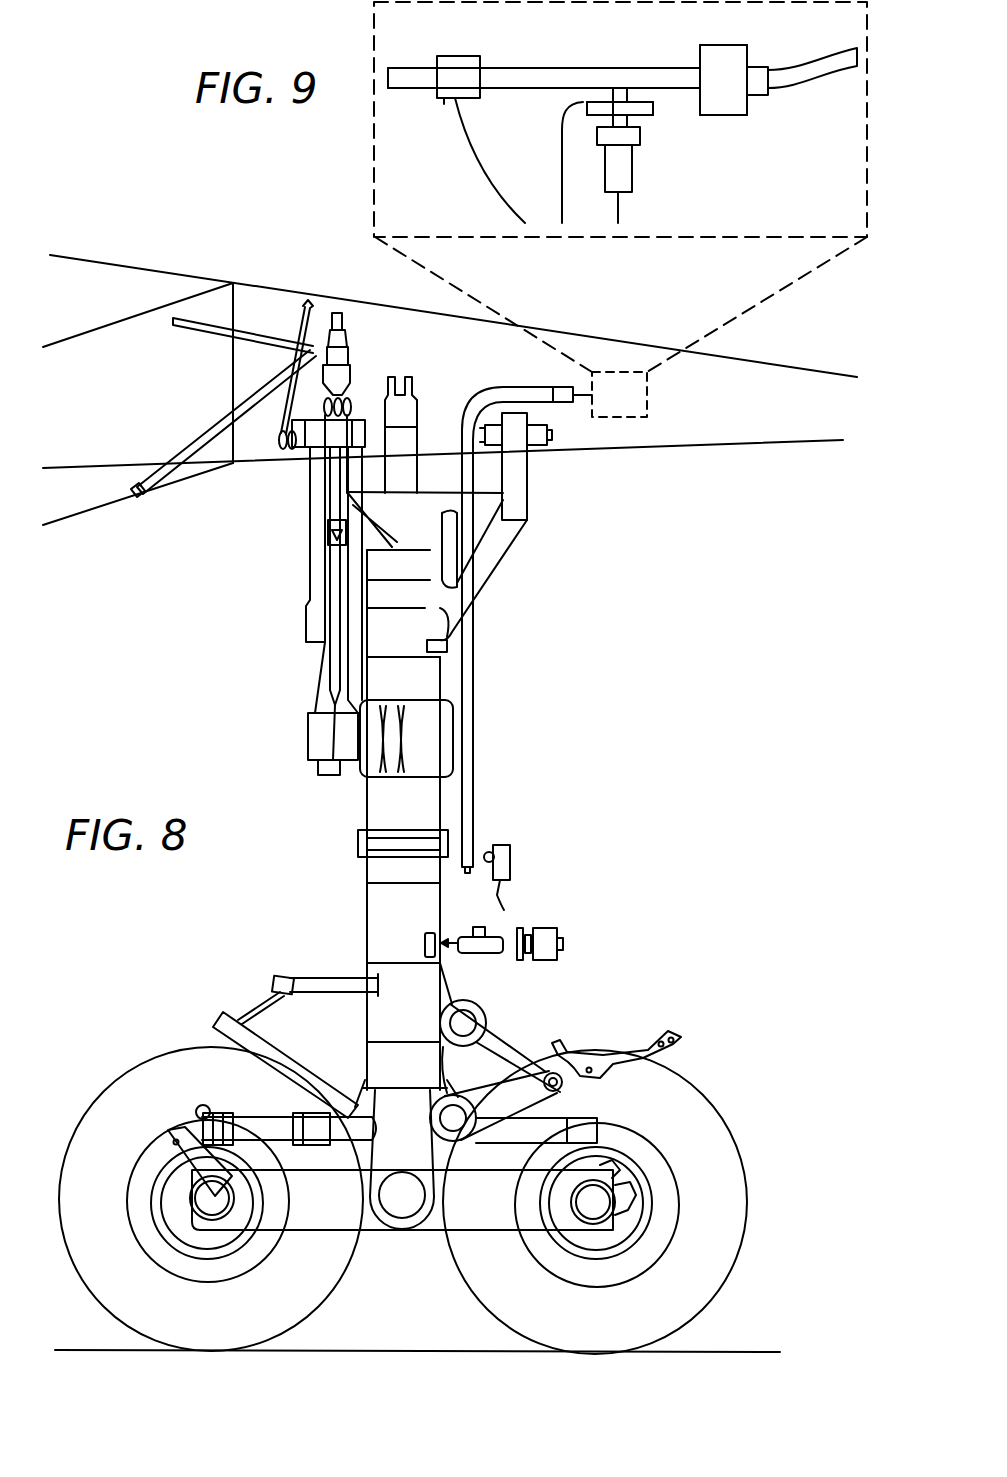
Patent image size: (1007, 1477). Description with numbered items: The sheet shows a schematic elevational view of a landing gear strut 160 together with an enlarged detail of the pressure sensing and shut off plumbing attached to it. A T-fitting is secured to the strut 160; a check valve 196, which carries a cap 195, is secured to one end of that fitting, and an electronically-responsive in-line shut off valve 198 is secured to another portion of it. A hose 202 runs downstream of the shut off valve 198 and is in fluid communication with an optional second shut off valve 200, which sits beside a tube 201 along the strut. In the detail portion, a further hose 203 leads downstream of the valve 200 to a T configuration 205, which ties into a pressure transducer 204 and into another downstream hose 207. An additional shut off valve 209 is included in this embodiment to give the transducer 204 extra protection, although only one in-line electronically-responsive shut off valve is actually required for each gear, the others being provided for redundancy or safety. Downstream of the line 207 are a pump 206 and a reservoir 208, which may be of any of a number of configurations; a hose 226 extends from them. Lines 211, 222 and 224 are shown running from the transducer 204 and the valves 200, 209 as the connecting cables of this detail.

In FIG. 8, the strut 160 is at (388, 917).
In FIG. 8, the cap 195 is at (548, 928).
In FIG. 8, the check valve 196 is at (480, 955).
In FIG. 8, the electronically-responsive in-line shut off valve 198 is at (510, 857).
In FIG. 9, the second shut off valve 200 is at (444, 104).
In FIG. 8, the second shut off valve 200 is at (563, 402).
In FIG. 8, the tube 201 is at (518, 533).
In FIG. 9, the hose 202 is at (418, 67).
In FIG. 9, the hose 203 is at (535, 67).
In FIG. 9, the pressure transducer 204 is at (632, 160).
In FIG. 9, the T configuration 205 is at (620, 67).
In FIG. 9, the pump 206 is at (735, 115).
In FIG. 9, the hose 207 is at (670, 67).
In FIG. 9, the reservoir 208 is at (735, 115).
In FIG. 9, the additional shut off valve 209 is at (653, 112).
In FIG. 9, the signal cable 211 is at (561, 157).
In FIG. 9, the transducer cable 222 is at (620, 203).
In FIG. 9, the cable 224 is at (472, 160).
In FIG. 9, the hose 226 is at (800, 67).